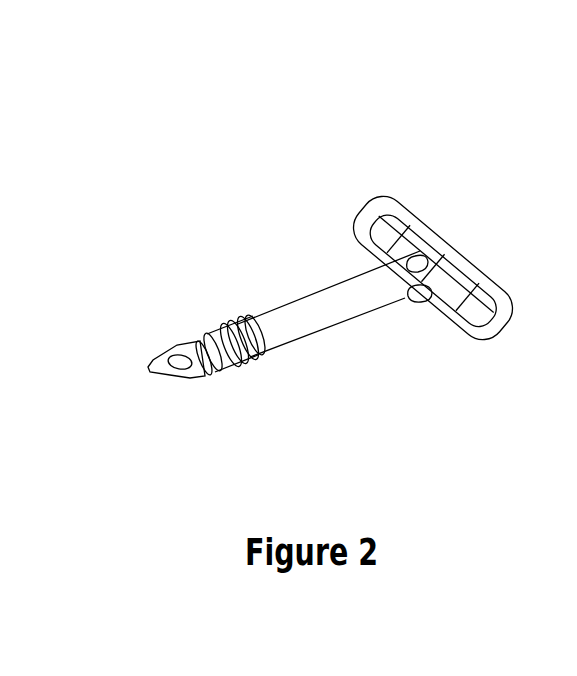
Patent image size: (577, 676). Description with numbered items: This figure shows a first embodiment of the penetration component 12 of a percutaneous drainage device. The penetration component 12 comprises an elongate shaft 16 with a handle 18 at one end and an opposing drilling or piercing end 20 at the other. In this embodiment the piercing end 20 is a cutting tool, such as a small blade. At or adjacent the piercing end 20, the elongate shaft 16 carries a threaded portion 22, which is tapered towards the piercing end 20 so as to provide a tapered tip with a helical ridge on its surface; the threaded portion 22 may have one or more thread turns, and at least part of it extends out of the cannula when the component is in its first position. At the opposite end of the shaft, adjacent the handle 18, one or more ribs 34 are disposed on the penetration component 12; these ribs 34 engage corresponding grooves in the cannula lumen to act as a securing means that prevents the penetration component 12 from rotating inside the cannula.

The penetration component 12 is at (230, 252).
The elongate shaft 16 is at (332, 317).
The handle 18 is at (356, 220).
The piercing end 20 is at (160, 377).
The threaded portion 22 is at (228, 365).
The ribs 34 is at (426, 258).